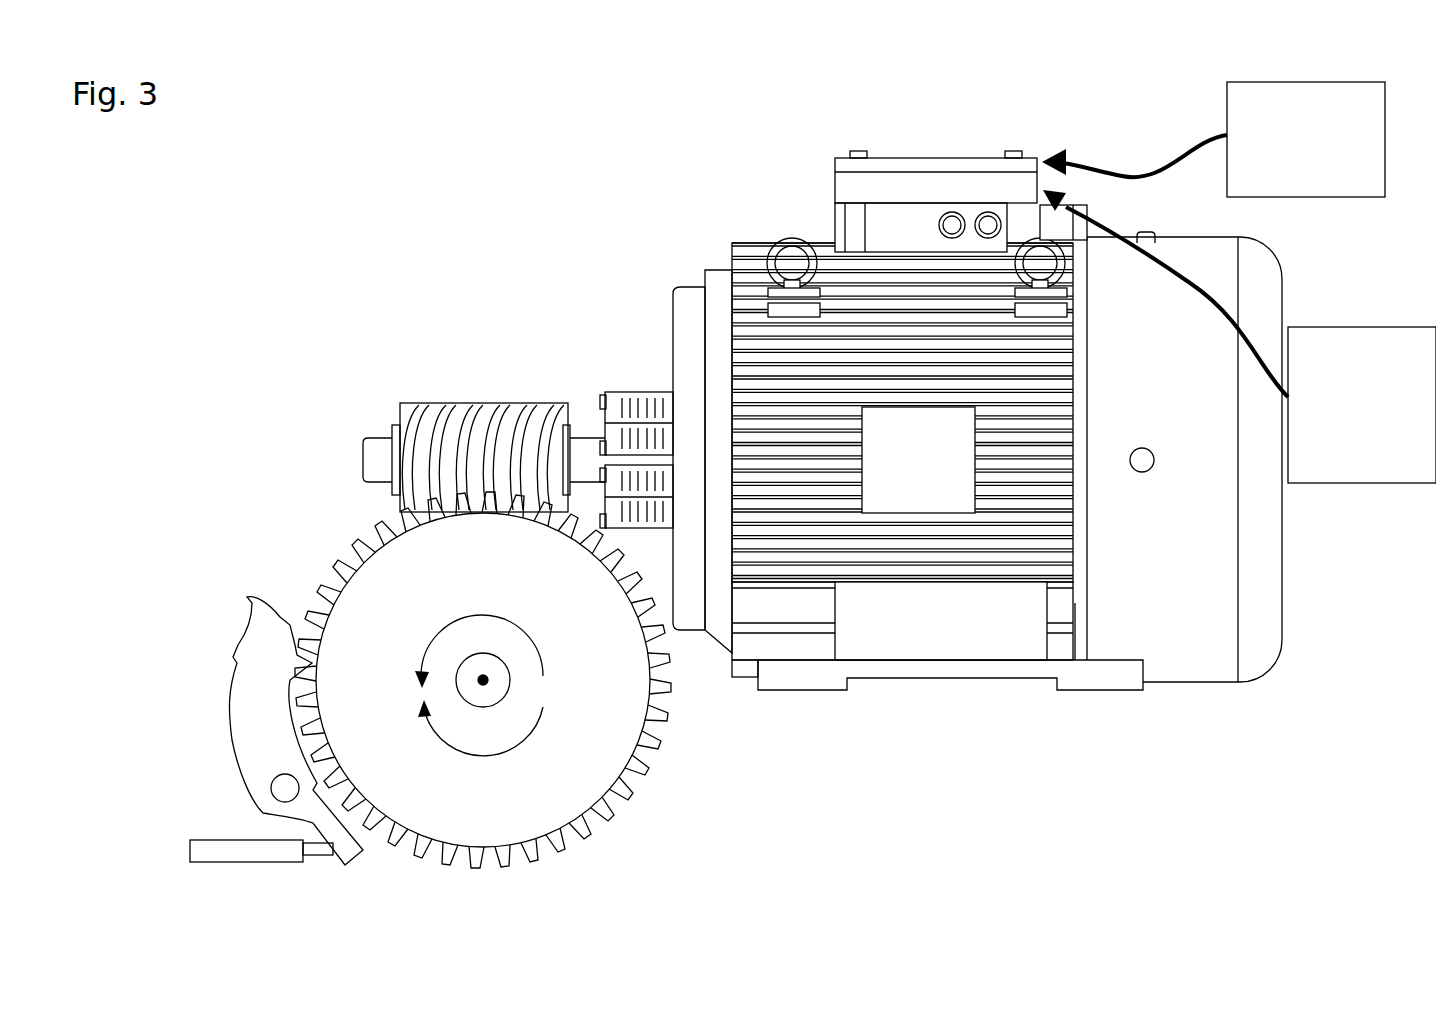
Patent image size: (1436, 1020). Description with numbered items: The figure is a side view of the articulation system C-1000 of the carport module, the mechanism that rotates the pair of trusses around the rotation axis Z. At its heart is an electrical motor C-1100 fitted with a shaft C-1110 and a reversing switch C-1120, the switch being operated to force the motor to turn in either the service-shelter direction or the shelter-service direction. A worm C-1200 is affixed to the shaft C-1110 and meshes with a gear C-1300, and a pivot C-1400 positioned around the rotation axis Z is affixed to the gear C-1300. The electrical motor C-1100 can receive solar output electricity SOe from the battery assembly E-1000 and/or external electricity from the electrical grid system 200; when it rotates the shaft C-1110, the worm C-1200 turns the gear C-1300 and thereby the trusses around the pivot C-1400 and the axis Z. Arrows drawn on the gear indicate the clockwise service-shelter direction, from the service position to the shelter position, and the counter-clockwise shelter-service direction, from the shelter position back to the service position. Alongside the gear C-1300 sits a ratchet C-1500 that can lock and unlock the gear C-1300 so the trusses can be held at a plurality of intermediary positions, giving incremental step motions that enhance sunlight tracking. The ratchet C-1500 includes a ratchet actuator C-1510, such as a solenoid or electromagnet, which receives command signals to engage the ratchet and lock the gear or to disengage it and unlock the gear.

The articulation system C-1000 is at (545, 203).
The electrical motor C-1100 is at (1170, 675).
The shaft C-1110 is at (368, 462).
The reversing switch C-1120 is at (833, 200).
The worm C-1200 is at (470, 405).
The gear C-1300 is at (372, 550).
The pivot C-1400 is at (508, 675).
The ratchet C-1500 is at (240, 640).
The ratchet actuator C-1510 is at (267, 843).
The rotation axis Z is at (488, 682).
The battery assembly E-1000 is at (1306, 139).
The electrical grid system 200 is at (1239, 336).
The solar output electricity SOe is at (1134, 150).